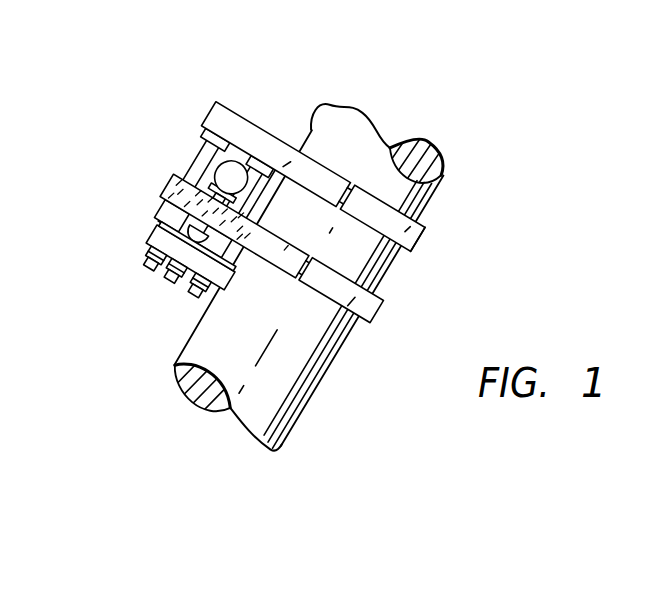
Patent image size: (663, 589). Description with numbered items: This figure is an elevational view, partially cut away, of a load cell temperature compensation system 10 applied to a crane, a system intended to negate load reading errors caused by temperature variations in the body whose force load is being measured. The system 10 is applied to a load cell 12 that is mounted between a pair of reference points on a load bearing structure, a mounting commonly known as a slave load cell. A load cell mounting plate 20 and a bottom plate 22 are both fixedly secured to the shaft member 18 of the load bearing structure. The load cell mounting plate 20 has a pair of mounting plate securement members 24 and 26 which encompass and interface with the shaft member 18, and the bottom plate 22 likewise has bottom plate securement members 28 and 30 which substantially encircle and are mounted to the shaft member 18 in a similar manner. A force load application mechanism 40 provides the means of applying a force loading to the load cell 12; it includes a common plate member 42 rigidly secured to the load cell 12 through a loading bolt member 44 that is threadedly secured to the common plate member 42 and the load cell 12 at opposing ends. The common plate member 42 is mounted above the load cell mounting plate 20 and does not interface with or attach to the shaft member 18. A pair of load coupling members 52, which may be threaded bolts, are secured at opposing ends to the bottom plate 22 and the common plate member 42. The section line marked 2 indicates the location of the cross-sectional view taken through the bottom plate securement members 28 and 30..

The section line 2- 2 is at (240, 75).
The load cell temperature compensation system 10 is at (120, 207).
The load cell 12 is at (223, 175).
The shaft member 18 is at (297, 410).
The load cell mounting plate 20 is at (378, 321).
The bottom plate 22 is at (426, 257).
The mounting plate securement member 24 is at (333, 310).
The mounting plate securement member 26 is at (286, 249).
The bottom plate securement member 28 is at (376, 160).
The bottom plate securement member 30 is at (311, 167).
The force load application mechanism 40 is at (136, 263).
The common plate member 42 is at (148, 232).
The loading bolt member 44 is at (168, 278).
The load coupling member 52 is at (148, 262).